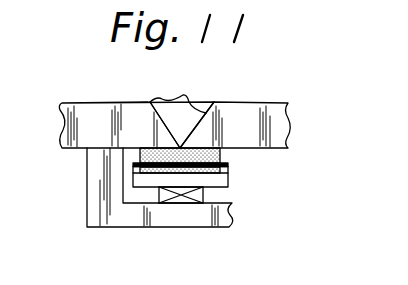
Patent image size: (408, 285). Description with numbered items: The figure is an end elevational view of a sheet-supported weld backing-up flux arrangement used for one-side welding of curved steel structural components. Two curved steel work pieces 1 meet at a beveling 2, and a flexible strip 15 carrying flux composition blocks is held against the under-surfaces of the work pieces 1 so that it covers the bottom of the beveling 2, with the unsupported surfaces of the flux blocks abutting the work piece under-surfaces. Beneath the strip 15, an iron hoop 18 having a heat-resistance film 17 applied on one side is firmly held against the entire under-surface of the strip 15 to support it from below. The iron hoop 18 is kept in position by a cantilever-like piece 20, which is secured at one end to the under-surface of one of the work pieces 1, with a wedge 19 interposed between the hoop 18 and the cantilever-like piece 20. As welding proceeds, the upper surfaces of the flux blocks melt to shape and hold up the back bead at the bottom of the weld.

The work piece 1 is at (174, 109).
The beveling 2 is at (191, 137).
The flexible strip 15 is at (228, 167).
The heat-resistance film 17 is at (133, 170).
The iron hoop 18 is at (133, 180).
The wedge 19 is at (193, 204).
The cantilever-like piece 20 is at (135, 213).